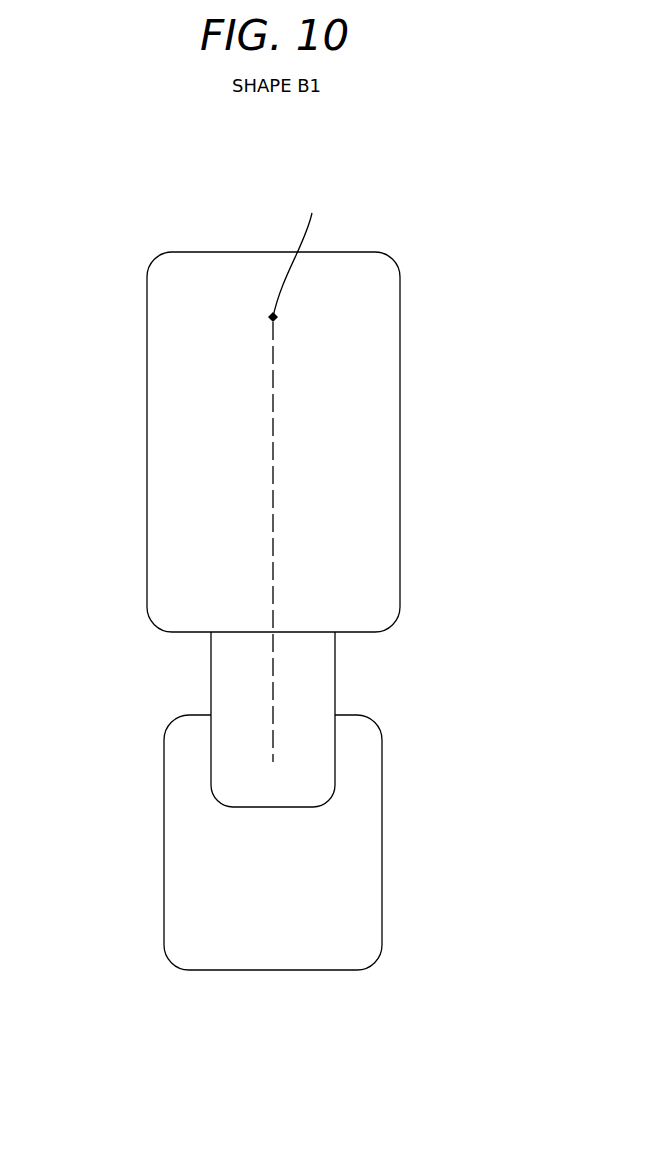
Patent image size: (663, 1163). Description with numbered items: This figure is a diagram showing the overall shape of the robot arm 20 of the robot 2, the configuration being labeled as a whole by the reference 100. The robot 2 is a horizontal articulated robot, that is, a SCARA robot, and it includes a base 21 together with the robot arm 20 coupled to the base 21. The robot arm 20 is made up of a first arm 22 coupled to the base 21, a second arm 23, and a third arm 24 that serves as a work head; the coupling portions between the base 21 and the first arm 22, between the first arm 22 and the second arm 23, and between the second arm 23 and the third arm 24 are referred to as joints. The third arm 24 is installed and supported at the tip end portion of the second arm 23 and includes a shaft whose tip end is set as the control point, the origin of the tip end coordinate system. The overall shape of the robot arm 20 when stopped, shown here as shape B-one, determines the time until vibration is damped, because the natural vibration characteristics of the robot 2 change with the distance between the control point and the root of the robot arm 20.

The robot system 100 is at (409, 186).
The robot 2 is at (214, 237).
The robot arm 20 is at (211, 681).
The base 21 is at (382, 835).
The first arm 22 is at (335, 677).
The second arm 23 is at (400, 425).
The third arm 24 is at (273, 317).